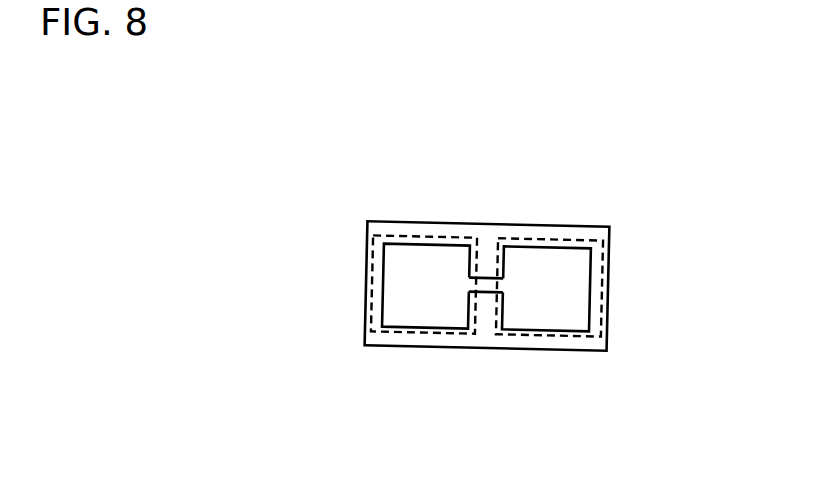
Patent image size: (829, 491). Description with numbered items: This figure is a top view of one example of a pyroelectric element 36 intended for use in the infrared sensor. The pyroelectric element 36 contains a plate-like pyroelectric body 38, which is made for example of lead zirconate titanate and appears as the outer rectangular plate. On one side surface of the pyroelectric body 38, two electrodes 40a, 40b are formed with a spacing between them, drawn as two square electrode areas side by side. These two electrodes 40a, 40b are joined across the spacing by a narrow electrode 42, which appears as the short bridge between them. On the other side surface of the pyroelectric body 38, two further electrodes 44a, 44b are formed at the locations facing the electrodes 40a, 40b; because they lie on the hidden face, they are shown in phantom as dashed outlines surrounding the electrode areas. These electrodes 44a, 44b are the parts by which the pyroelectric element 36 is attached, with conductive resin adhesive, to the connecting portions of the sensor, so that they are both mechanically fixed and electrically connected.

The pyroelectric element 36 is at (297, 129).
The pyroelectric body 38 is at (490, 238).
The electrode 40a is at (412, 293).
The electrode 40b is at (568, 309).
The narrow electrode 42 is at (486, 289).
The electrode 44a is at (375, 258).
The electrode 44b is at (600, 263).